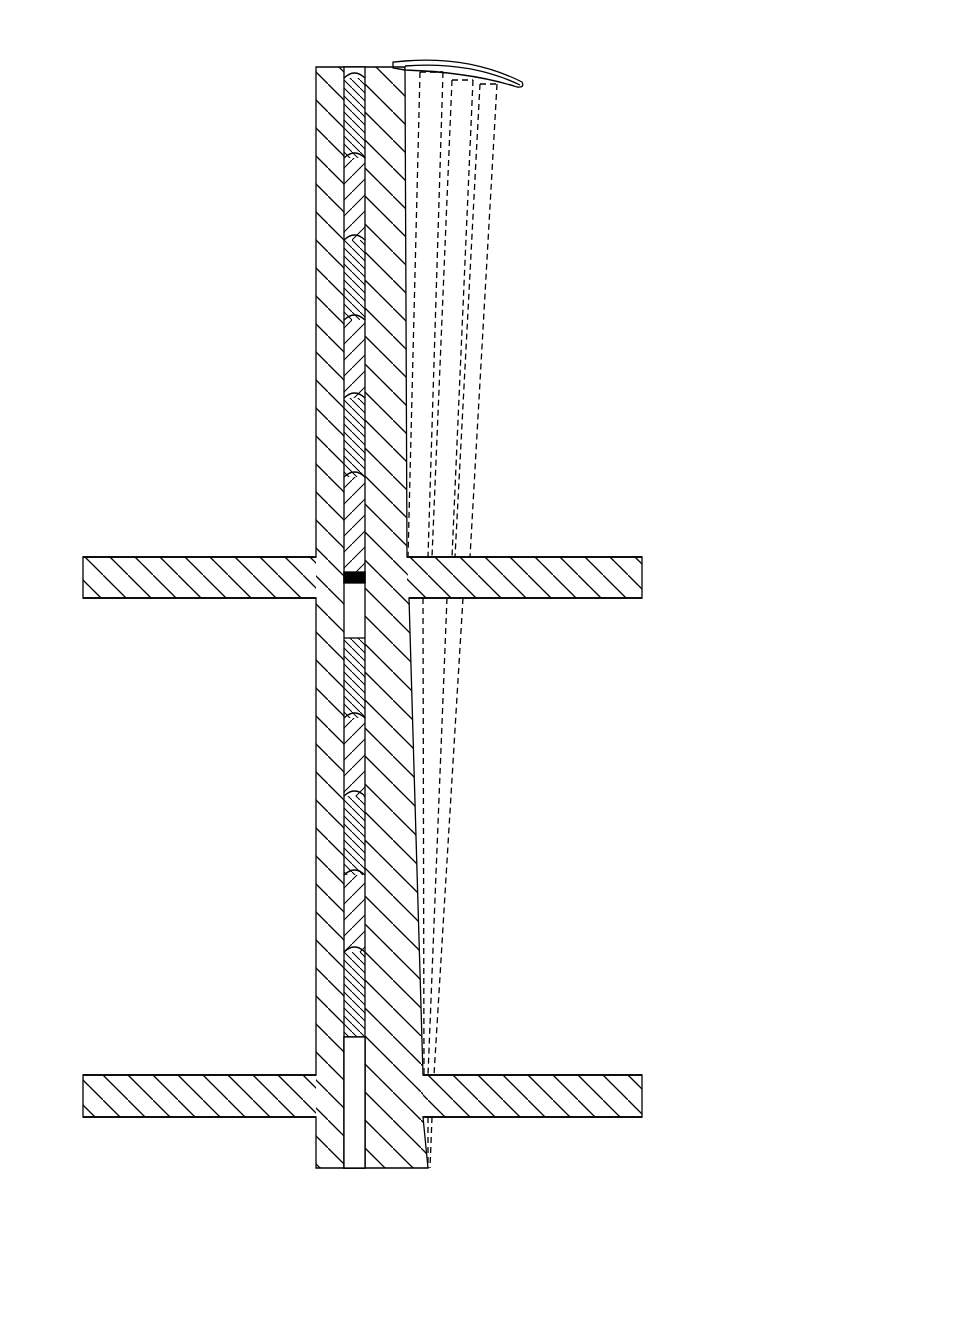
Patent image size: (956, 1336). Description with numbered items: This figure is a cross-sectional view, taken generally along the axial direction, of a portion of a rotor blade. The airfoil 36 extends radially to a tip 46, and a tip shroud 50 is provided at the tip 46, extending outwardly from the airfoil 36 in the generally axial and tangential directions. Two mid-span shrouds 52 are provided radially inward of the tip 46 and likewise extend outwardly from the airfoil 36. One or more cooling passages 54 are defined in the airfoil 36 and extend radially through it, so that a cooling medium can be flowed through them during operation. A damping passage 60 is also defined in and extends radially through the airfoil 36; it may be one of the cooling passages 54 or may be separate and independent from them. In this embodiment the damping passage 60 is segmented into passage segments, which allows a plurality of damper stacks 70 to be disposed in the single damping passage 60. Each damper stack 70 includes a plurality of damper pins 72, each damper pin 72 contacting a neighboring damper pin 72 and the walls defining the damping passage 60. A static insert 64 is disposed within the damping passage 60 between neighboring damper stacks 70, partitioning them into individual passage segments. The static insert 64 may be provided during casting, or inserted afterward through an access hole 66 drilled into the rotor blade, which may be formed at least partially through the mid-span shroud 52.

The airfoil 36 is at (205, 247).
The tip 46 is at (268, 57).
The tip shroud 50 is at (517, 70).
The mid-span shroud 52 is at (582, 524).
The cooling passage 54 is at (475, 268).
The damping passage 60 is at (344, 1062).
The static insert 64 is at (344, 574).
The access hole 66 is at (407, 618).
The damper stack 70 is at (344, 462).
The damper pin 72 is at (344, 428).